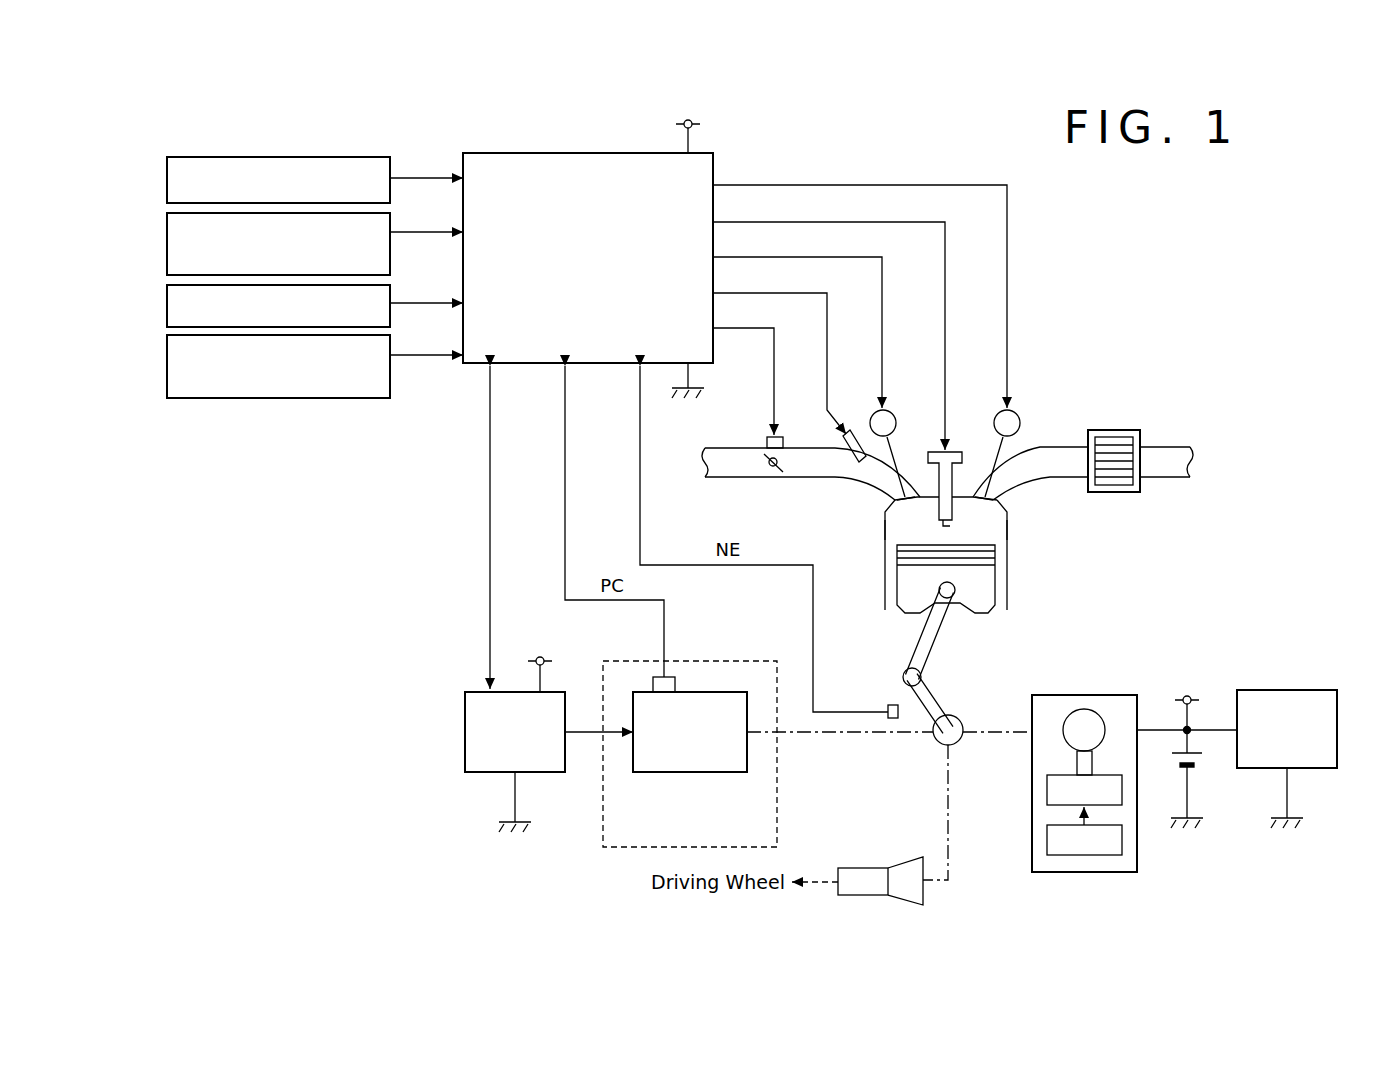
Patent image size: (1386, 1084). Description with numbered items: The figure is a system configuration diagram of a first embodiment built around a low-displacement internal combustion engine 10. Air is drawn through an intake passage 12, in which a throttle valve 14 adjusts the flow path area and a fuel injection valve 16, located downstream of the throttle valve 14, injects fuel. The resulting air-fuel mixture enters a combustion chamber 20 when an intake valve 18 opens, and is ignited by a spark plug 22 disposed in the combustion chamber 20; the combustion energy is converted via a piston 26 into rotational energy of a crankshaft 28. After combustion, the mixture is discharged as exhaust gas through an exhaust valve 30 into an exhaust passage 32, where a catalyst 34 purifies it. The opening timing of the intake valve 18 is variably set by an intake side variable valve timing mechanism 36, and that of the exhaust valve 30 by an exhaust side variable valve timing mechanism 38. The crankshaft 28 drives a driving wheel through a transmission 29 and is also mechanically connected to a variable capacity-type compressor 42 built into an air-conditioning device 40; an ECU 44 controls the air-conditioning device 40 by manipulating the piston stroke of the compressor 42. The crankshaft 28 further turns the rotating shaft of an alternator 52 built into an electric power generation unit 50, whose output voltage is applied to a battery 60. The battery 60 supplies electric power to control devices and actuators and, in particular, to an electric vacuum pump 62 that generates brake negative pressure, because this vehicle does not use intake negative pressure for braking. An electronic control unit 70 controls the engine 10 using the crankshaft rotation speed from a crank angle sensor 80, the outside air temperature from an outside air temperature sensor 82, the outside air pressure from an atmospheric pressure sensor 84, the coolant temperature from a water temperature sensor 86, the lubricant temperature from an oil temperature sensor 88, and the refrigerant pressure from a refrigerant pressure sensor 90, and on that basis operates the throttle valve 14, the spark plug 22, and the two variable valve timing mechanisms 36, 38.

The internal combustion engine 10 is at (1050, 372).
The intake passage 12 is at (731, 478).
The throttle valve 14 is at (774, 470).
The fuel injection valve 16 is at (854, 428).
The intake valve 18 is at (894, 440).
The combustion chamber 20 is at (985, 536).
The spark plug 22 is at (958, 474).
The piston 26 is at (1007, 594).
The crankshaft 28 is at (959, 718).
The transmission 29 is at (866, 868).
The exhaust valve 30 is at (1018, 444).
The exhaust passage 32 is at (1062, 478).
The catalyst 34 is at (1112, 492).
The intake side variable valve timing mechanism 36 is at (892, 414).
The exhaust side variable valve timing mechanism 38 is at (1012, 412).
The air-conditioning device 40 is at (718, 730).
The compressor 42 is at (718, 691).
The ECU 44 is at (547, 690).
The electric power generation unit 50 is at (1114, 767).
The alternator 52 is at (1077, 710).
The battery 60 is at (1196, 770).
The electric vacuum pump 62 is at (1287, 690).
The electronic control unit (ECU) 70 is at (583, 155).
The crank angle sensor 80 is at (880, 705).
The outside air temperature sensor 82 is at (167, 354).
The atmospheric pressure sensor 84 is at (167, 304).
The water temperature sensor 86 is at (167, 234).
The oil temperature sensor 88 is at (167, 179).
The refrigerant pressure sensor 90 is at (668, 677).